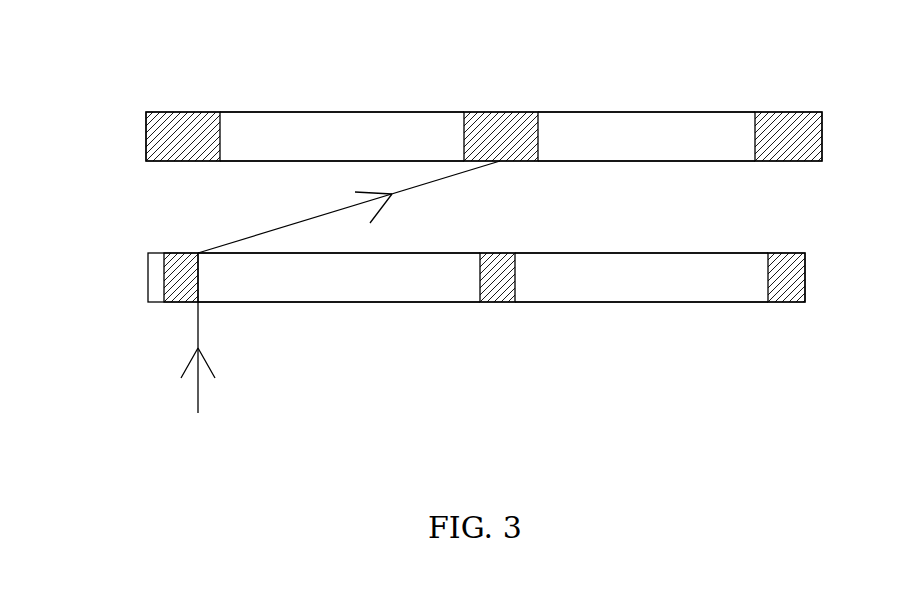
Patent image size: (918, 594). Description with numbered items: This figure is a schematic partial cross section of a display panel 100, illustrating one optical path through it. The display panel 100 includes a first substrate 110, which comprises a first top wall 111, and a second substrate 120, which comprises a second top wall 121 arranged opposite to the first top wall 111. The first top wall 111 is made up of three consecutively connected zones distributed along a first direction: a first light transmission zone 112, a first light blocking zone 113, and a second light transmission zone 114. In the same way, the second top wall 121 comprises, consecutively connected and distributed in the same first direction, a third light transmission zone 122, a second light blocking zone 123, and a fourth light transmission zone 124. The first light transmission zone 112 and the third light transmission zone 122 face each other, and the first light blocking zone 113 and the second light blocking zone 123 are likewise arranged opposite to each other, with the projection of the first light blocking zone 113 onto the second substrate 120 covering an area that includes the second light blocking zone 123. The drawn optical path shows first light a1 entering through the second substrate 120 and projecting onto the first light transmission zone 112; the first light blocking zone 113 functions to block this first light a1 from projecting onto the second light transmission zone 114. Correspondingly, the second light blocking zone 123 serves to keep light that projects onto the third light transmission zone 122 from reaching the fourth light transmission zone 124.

The display panel 100 is at (190, 52).
The first substrate 110 is at (146, 143).
The first top wall 111 is at (192, 162).
The first light transmission zone 112 is at (323, 127).
The first light blocking zone 113 is at (503, 120).
The second light transmission zone 114 is at (600, 115).
The second substrate 120 is at (148, 287).
The second top wall 121 is at (198, 253).
The third light transmission zone 122 is at (435, 300).
The second light blocking zone 123 is at (503, 293).
The fourth light transmission zone 124 is at (622, 287).
The first light a1 is at (204, 333).